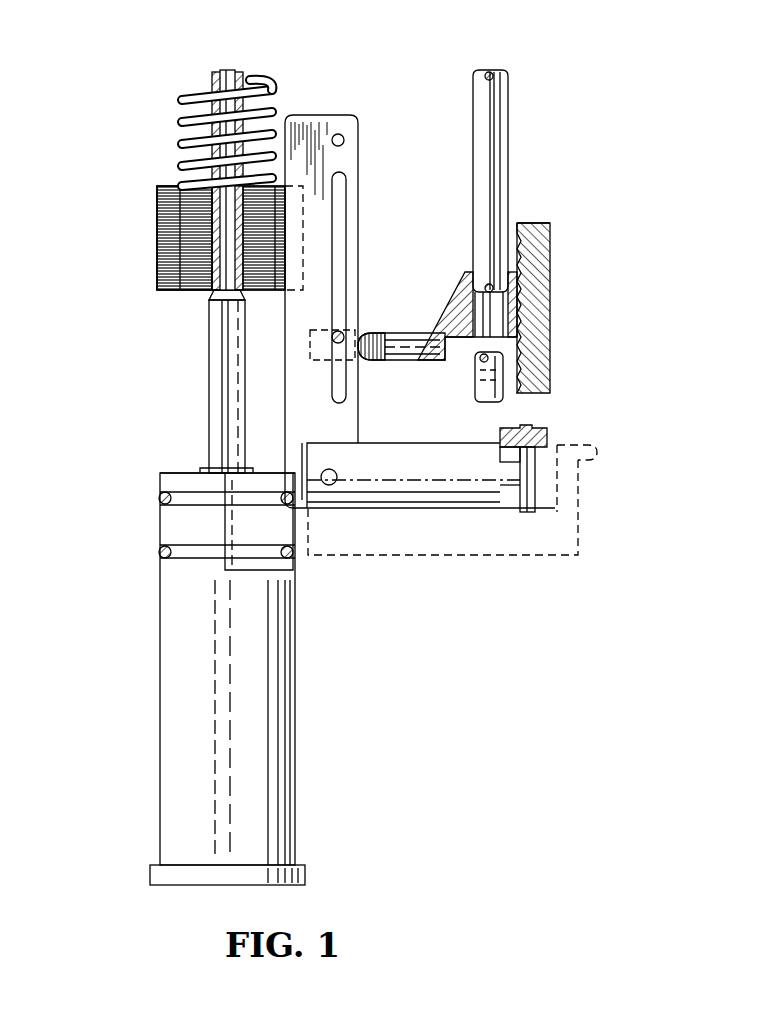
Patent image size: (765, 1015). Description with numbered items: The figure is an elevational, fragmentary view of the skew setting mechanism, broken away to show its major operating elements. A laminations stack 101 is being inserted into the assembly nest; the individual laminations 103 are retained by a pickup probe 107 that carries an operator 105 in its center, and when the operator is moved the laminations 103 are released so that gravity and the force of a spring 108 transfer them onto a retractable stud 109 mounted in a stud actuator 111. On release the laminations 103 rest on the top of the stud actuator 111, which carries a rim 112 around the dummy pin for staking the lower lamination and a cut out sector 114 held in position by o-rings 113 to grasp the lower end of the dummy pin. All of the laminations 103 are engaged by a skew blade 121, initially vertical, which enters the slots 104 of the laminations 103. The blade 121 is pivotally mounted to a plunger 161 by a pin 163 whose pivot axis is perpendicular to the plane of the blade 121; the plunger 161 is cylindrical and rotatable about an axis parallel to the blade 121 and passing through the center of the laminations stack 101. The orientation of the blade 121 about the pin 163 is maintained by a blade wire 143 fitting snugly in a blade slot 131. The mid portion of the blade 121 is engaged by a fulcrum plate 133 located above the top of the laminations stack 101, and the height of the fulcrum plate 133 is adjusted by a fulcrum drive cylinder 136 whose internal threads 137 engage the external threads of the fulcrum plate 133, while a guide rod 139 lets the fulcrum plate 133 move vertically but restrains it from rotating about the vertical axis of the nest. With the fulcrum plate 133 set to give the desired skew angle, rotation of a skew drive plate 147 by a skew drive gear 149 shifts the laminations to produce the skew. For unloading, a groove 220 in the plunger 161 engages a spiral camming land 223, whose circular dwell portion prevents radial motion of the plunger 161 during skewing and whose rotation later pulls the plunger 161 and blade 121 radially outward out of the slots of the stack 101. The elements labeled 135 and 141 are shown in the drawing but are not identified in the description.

The laminations stack 101 is at (157, 268).
The laminations 103 is at (157, 222).
The slots 104 is at (283, 292).
The operator 105 is at (232, 70).
The pickup probe 107 is at (212, 78).
The spring 108 is at (178, 100).
The retractable stud 109 is at (208, 343).
The stud actuator 111 is at (160, 650).
The rim 112 is at (195, 470).
The o-rings 113 is at (160, 552).
The cut out sector 114 is at (295, 540).
The skew blade 121 is at (358, 173).
The blade slot 131 is at (346, 233).
The fulcrum plate 133 is at (425, 325).
The block top surface 135 is at (524, 300).
The fulcrum drive cylinder 136 is at (550, 250).
The internal threads 137 is at (517, 235).
The guide rod 139 is at (505, 110).
The diagonal arm 141 is at (470, 272).
The blade wire 143 is at (340, 331).
The skew drive plate 147 is at (455, 565).
The skew drive gear 149 is at (620, 420).
The plunger 161 is at (420, 471).
The pin 163 is at (330, 469).
The groove 220 is at (512, 490).
The spiral camming land 223 is at (500, 440).